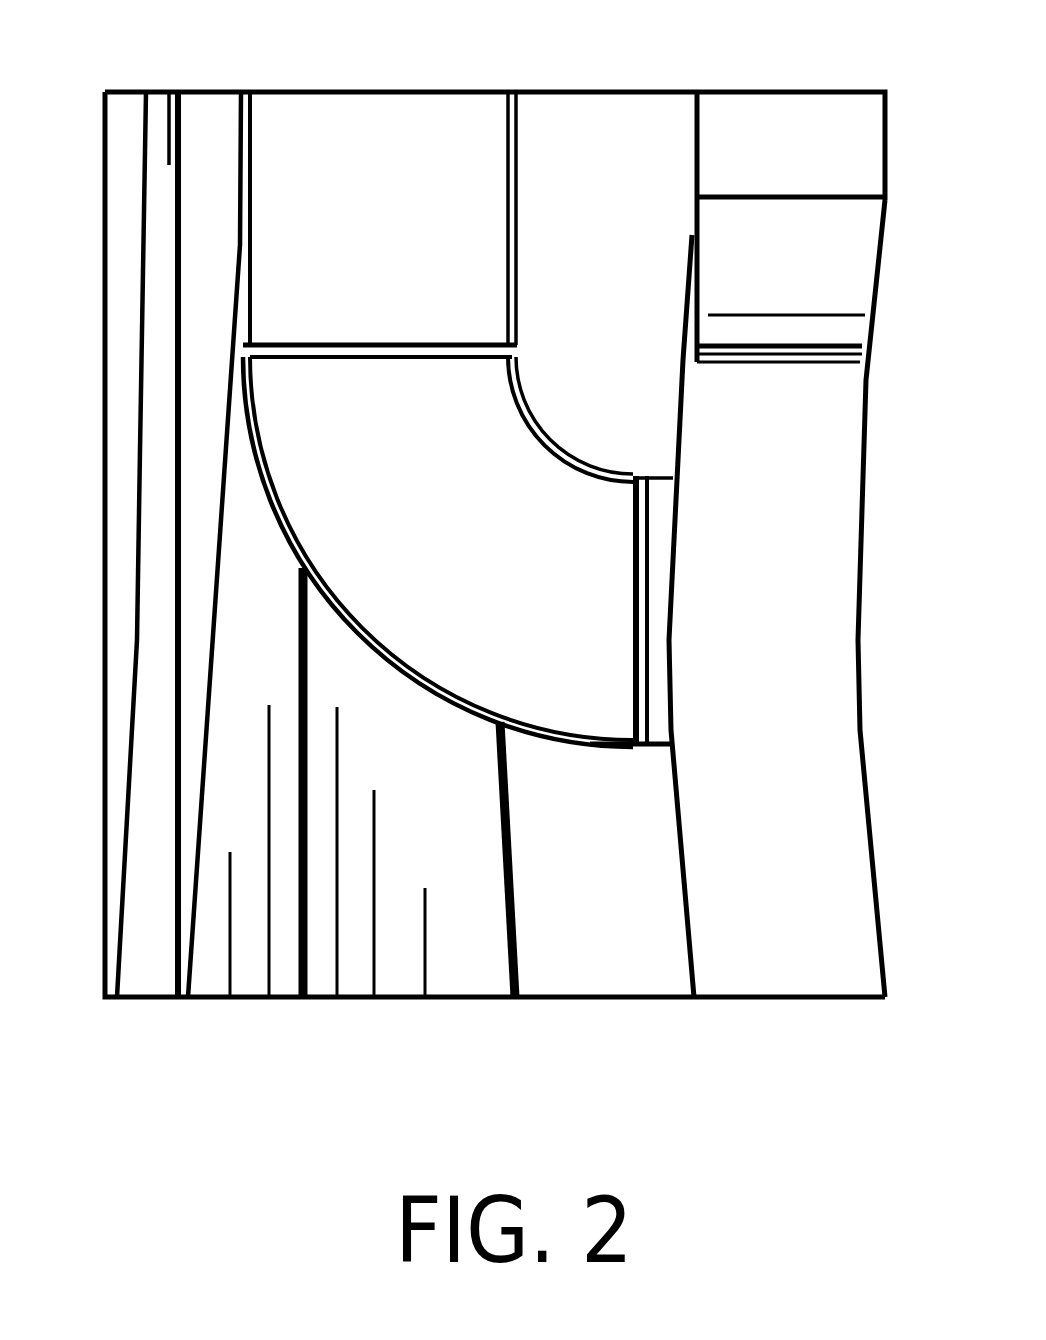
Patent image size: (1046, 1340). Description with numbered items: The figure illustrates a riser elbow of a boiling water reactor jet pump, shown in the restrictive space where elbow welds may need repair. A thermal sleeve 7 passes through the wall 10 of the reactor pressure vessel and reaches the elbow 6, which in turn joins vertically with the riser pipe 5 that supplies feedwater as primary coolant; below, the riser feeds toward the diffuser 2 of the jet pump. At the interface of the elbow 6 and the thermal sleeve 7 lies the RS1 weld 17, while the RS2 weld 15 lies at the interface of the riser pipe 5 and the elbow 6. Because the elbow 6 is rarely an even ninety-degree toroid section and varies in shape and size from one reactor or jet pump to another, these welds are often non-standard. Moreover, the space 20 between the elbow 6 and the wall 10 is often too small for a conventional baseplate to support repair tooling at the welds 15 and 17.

The diffuser 2 is at (230, 766).
The riser pipe 5 is at (368, 178).
The elbow 6 is at (395, 505).
The thermal sleeve 7 is at (658, 608).
The wall 10 is at (770, 455).
The weld 15 is at (517, 343).
The weld 17 is at (640, 748).
The space 20 is at (616, 402).